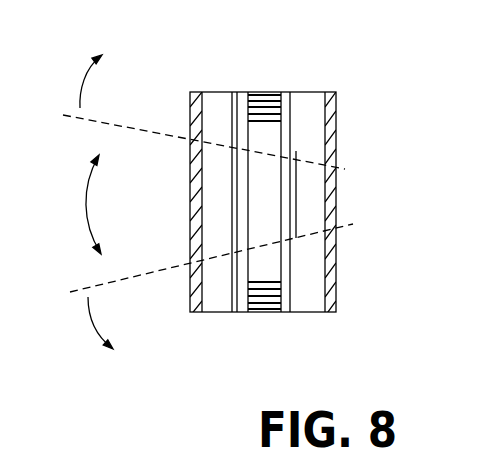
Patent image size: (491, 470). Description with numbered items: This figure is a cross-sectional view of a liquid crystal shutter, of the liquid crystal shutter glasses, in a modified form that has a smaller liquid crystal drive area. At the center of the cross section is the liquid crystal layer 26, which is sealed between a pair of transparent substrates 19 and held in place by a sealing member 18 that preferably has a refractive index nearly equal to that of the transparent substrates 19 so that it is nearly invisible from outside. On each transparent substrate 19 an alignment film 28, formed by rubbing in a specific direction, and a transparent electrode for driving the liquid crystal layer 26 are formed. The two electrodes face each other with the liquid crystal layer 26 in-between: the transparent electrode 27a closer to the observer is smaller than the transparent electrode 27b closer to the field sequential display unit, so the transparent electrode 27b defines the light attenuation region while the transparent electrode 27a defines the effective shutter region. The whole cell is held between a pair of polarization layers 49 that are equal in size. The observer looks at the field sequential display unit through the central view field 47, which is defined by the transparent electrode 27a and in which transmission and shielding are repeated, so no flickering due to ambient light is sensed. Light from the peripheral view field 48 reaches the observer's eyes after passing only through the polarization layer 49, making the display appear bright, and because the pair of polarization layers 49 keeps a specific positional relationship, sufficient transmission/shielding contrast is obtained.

The sealing member 18 is at (273, 93).
The transparent substrates 19 is at (222, 297).
The liquid crystal layer 26 is at (265, 222).
The transparent electrode closer to the observer 27a is at (296, 184).
The transparent electrode closer to the field sequential display unit 27b is at (232, 185).
The alignment film 28 is at (245, 92).
The central view field 47 is at (83, 212).
The peripheral view field 48 is at (78, 92).
The polarization layers 49 is at (198, 319).